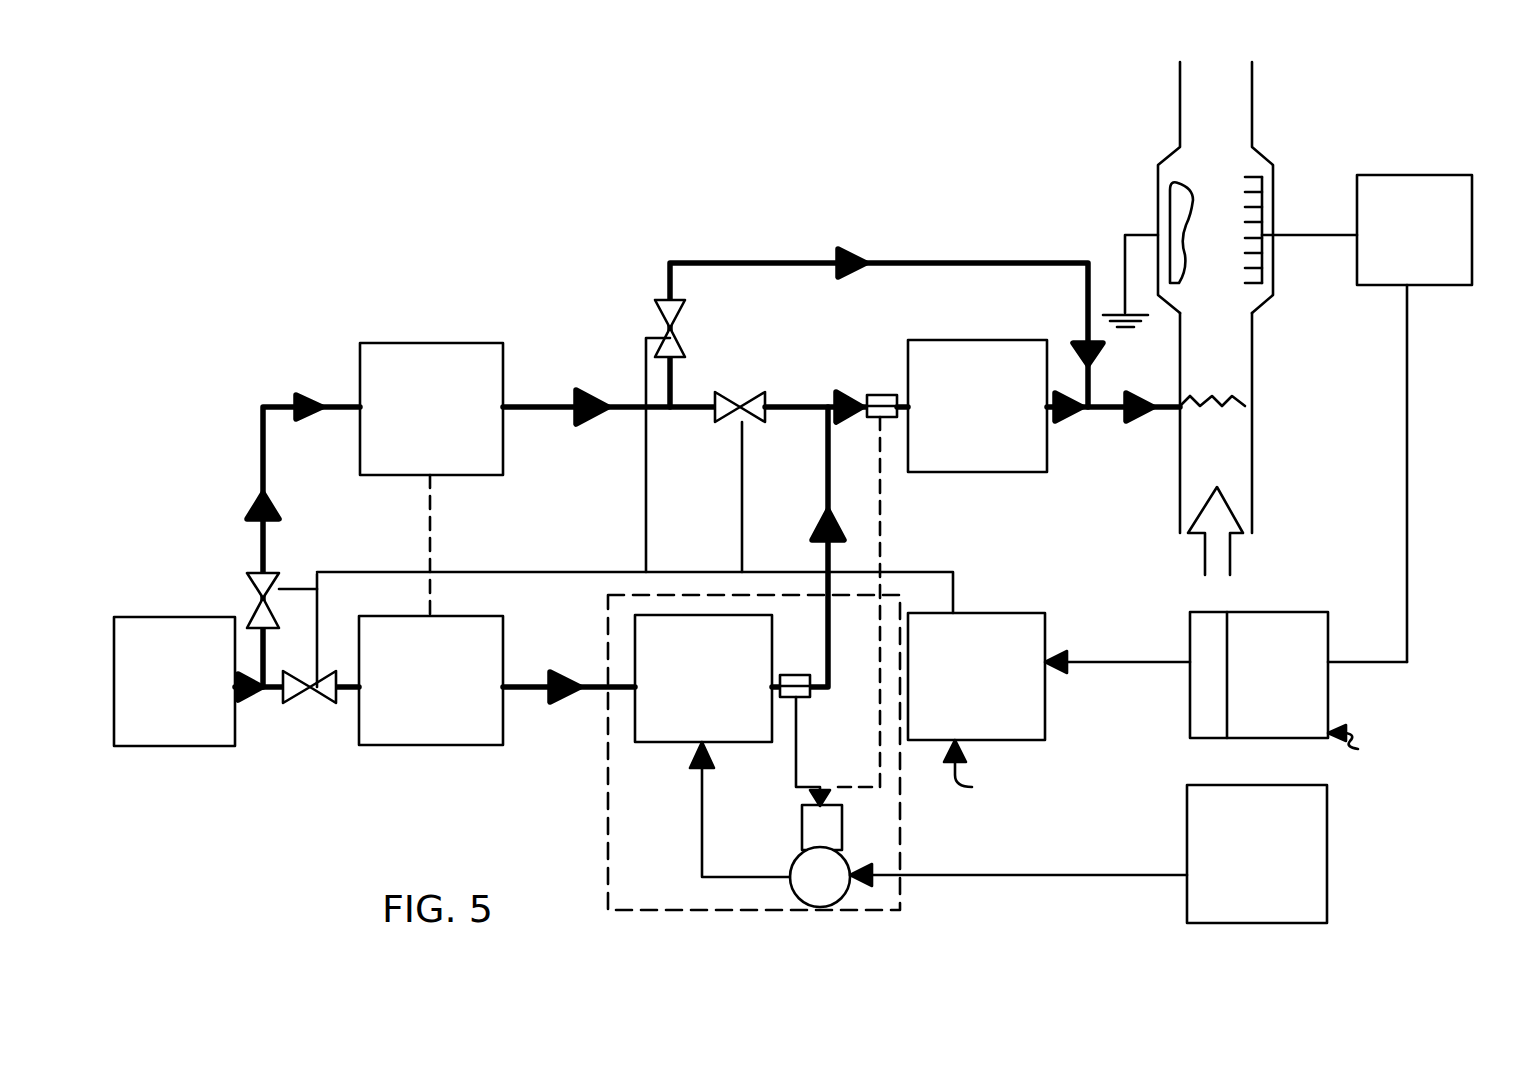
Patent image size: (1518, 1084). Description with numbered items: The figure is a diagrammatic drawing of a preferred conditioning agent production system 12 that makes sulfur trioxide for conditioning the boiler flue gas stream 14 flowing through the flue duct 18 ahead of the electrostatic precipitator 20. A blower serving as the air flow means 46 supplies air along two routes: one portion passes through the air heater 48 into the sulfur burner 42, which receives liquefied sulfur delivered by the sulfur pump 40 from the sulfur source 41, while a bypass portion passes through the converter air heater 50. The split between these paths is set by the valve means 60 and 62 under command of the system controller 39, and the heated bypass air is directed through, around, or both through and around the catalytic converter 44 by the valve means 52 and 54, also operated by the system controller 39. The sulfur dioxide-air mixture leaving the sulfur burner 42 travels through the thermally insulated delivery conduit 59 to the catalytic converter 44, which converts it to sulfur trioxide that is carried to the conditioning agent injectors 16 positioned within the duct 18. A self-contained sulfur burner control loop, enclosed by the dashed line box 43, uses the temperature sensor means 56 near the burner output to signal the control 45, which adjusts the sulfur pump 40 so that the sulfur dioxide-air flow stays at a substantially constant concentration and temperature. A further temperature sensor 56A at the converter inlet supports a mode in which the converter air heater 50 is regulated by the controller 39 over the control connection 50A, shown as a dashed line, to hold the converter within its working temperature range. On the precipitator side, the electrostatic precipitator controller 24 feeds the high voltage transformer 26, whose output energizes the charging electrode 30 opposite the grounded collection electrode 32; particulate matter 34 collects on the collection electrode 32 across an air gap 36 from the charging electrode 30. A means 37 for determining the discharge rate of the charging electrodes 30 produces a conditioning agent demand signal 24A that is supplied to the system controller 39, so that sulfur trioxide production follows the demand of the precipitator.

The conditioning agent production system 12 is at (505, 190).
The boiler flue gas stream 14 is at (1232, 565).
The conditioning agent injectors 16 is at (1222, 393).
The flue duct 18 is at (1252, 435).
The electrostatic precipitator 20 is at (1263, 155).
The electrostatic precipitator controller 24 is at (1328, 720).
The conditioning agent demand signal 24A is at (1178, 660).
The high voltage transformer 26 is at (1472, 250).
The charging electrode 30 is at (1267, 205).
The collection electrode 32 is at (1165, 230).
The collected particulate matter 34 is at (1186, 213).
The air gap 36 is at (1227, 190).
The means for determining discharge rate 37 is at (1213, 610).
The system controller 39 is at (1012, 613).
The sulfur pump 40 is at (852, 890).
The sulfur source 41 is at (1328, 810).
The sulfur burner 42 is at (632, 703).
The dashed line box 43 is at (608, 638).
The catalytic converter 44 is at (1013, 472).
The control 45 is at (802, 840).
The air flow means 46 is at (175, 620).
The air heater 48 is at (457, 747).
The converter air heater 50 is at (470, 343).
The control connection 50A is at (430, 489).
The valve means 52 is at (731, 423).
The valve means 54 is at (656, 320).
The temperature sensor means 56 is at (795, 675).
The temperature sensor 56A is at (868, 392).
The thermally insulated delivery conduit 59 is at (822, 486).
The valve means 60 is at (322, 705).
The valve means 62 is at (257, 590).